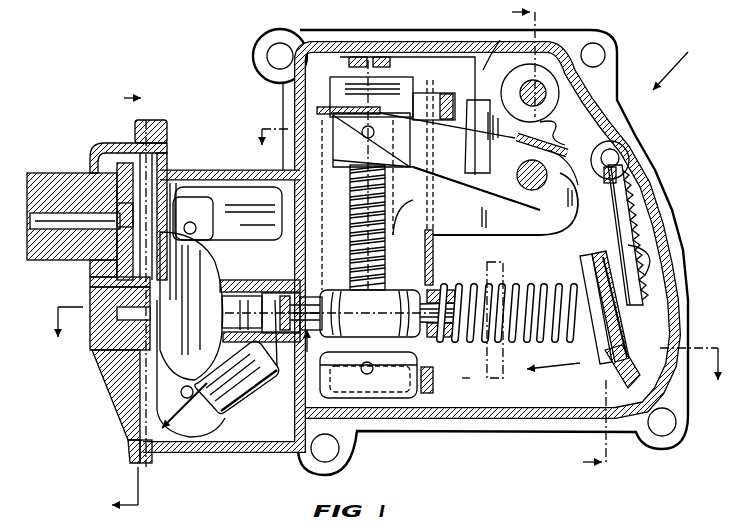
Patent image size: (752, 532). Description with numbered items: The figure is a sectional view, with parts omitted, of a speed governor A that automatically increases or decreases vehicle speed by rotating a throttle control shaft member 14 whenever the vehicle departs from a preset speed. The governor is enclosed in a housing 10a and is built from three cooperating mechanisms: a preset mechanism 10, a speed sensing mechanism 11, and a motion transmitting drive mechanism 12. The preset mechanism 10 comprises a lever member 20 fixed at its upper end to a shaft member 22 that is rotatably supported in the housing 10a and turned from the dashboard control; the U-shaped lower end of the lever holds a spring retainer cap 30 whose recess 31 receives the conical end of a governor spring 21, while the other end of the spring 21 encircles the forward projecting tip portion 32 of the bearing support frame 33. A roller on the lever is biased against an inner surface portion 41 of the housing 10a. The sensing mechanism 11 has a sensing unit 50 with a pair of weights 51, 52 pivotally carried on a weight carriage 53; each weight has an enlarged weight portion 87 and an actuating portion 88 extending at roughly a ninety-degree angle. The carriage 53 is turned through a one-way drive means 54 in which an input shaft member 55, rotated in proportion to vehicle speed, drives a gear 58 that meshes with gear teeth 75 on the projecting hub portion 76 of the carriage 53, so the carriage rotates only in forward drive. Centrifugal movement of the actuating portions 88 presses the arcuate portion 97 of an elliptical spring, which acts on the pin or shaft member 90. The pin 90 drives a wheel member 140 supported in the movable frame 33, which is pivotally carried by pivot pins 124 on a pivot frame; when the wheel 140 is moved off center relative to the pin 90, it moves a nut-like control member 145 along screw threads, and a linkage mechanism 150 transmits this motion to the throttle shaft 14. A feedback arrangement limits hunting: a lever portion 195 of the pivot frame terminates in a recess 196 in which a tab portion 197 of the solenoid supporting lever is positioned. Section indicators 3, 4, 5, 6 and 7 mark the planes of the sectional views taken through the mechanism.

The housing 10a is at (578, 33).
The speed governor A is at (676, 60).
The input shaft member 55 is at (76, 173).
The gear 58 is at (110, 146).
The one-way drive means 54 is at (166, 122).
The gear teeth 75 is at (90, 283).
The projecting portion 76 is at (95, 302).
The actuating portion 88 is at (131, 354).
The weight carriage 53 is at (114, 401).
The speed sensing mechanism 11 is at (144, 454).
The weight 51 is at (233, 206).
The arcuate portion of spring means 97 is at (221, 276).
The pin member 90 is at (287, 281).
The wheel member 140 is at (415, 283).
The control member 145 is at (343, 55).
The section line 5 is at (413, 70).
The motion transmitting drive mechanism 12 is at (410, 70).
The lever portion 195 is at (477, 223).
The lever member 20 is at (455, 145).
The shaft member 22 is at (552, 104).
The throttle control shaft member 14 is at (552, 151).
The recess 196 is at (610, 210).
The tab portion 197 is at (604, 148).
The inner surface portion 41 is at (635, 168).
The spring retainer cap 30 is at (620, 332).
The recess 31 is at (592, 368).
The governor spring 21 is at (522, 288).
The pivot pin 124 is at (375, 370).
The bearing support frame 33 is at (436, 378).
The projecting tip portion 32 is at (472, 390).
The preset mechanism 10 is at (525, 356).
The sensing unit 50 is at (240, 426).
The weight 52 is at (288, 411).
The weight portion 87 is at (227, 433).
The section line 3 is at (485, 265).
The section line 4 is at (182, 338).
The section line 6 is at (119, 301).
The section line 7 is at (552, 238).
The linkage mechanism 150 is at (500, 40).